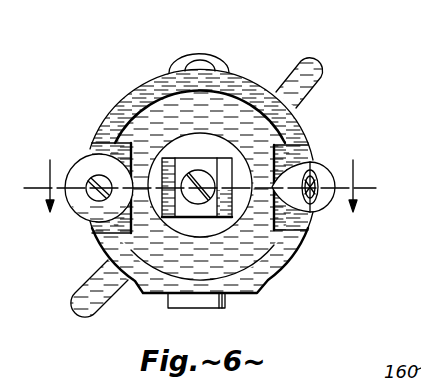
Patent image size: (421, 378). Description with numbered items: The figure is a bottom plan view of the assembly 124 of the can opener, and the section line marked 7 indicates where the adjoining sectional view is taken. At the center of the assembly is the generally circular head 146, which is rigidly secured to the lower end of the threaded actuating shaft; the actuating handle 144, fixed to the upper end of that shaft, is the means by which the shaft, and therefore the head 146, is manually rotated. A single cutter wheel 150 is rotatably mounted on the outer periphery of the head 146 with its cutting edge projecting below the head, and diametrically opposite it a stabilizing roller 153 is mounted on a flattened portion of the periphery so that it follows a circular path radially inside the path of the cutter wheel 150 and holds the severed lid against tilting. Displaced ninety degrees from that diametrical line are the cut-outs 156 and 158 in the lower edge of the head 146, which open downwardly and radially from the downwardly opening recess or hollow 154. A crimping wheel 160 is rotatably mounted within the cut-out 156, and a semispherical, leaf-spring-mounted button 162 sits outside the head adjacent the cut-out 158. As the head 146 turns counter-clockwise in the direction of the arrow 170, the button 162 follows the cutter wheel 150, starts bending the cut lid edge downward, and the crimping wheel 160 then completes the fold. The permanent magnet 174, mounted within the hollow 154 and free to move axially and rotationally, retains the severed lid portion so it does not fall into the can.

The assembly 124 is at (268, 56).
The cutter wheel 150 is at (202, 54).
The arrow 170 is at (112, 60).
The actuating handle 144 is at (308, 75).
The cut-out 156 is at (90, 143).
The permanent magnet 174 is at (225, 163).
The cut-out 158 is at (308, 158).
The crimping wheel 160 is at (88, 213).
The button 162 is at (306, 208).
The head 146 is at (273, 262).
The recess or hollow 154 is at (172, 265).
The stabilizing roller 153 is at (210, 298).
The section line 7- 7 is at (201, 193).